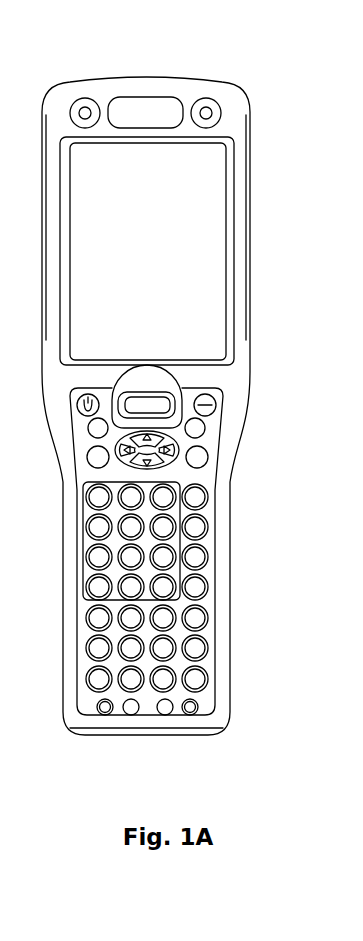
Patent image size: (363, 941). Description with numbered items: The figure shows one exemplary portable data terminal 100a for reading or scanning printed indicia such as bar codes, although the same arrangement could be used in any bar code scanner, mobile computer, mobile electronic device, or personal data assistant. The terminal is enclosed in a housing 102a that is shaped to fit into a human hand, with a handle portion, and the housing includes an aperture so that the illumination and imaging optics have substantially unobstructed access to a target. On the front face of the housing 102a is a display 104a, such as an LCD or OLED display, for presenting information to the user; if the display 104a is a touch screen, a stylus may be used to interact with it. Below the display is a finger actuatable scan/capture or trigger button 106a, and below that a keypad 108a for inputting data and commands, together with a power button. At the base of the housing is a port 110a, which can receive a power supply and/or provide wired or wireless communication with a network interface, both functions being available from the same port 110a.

The portable data terminal 100a is at (246, 48).
The housing 102a is at (153, 74).
The display 104a is at (147, 251).
The scan/capture or trigger button 106a is at (178, 391).
The keypad 108a is at (211, 478).
The port 110a is at (160, 736).